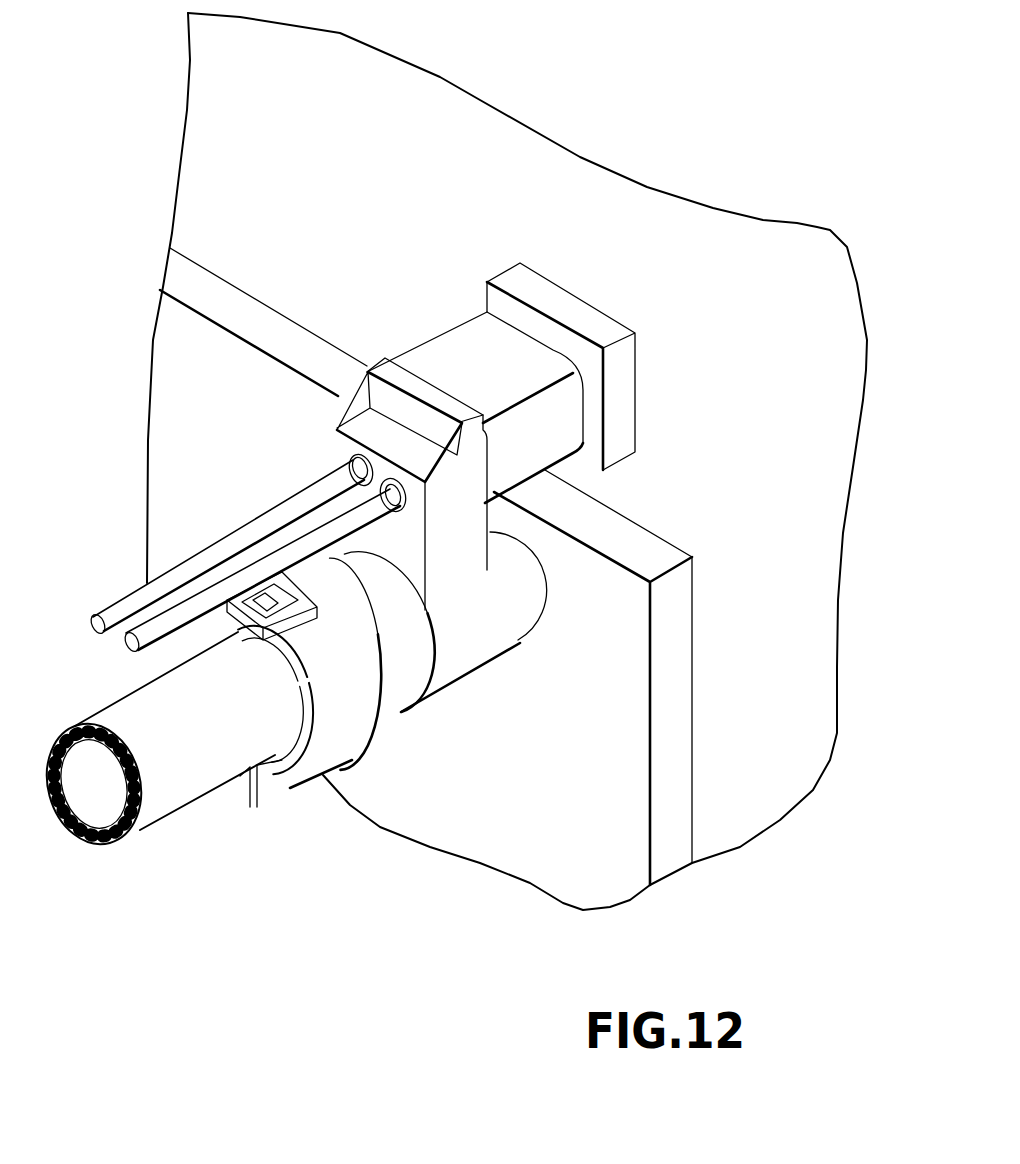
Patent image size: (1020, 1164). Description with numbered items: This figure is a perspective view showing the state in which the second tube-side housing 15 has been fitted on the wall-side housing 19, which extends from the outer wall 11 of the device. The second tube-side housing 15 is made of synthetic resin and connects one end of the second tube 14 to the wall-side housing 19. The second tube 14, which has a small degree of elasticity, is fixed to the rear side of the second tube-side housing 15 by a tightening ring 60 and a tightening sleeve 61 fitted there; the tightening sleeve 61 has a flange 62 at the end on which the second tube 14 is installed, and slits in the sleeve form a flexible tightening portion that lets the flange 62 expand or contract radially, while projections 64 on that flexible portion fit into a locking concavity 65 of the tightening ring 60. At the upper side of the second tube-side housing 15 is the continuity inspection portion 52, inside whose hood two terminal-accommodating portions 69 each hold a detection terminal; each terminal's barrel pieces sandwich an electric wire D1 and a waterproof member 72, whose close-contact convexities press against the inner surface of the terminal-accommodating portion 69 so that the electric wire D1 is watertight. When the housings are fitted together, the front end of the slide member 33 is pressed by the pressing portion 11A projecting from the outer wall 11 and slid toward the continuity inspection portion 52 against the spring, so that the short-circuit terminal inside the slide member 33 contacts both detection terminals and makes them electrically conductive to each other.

The outer wall 11 is at (808, 240).
The pressing portion 11A is at (585, 350).
The second tube 14 is at (140, 822).
The second tube-side housing 15 is at (225, 395).
The wall-side housing 19 is at (533, 620).
The slide member 33 is at (466, 318).
The continuity inspection portion 52 is at (375, 362).
The tightening ring 60 is at (340, 757).
The tightening sleeve 61 is at (261, 818).
The flange 62 is at (283, 795).
The projection 64 is at (262, 604).
The locking concavity 65 is at (258, 605).
The terminal-accommodating portion 69 is at (343, 467).
The waterproof member 72 is at (348, 458).
The electric wire D1 is at (122, 641).